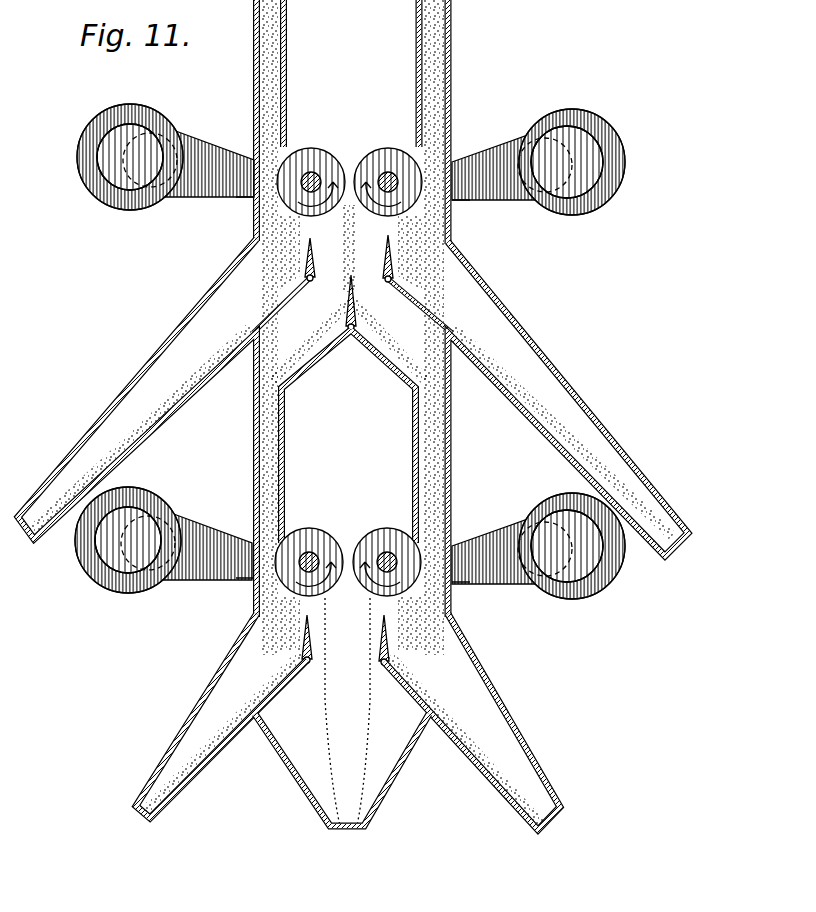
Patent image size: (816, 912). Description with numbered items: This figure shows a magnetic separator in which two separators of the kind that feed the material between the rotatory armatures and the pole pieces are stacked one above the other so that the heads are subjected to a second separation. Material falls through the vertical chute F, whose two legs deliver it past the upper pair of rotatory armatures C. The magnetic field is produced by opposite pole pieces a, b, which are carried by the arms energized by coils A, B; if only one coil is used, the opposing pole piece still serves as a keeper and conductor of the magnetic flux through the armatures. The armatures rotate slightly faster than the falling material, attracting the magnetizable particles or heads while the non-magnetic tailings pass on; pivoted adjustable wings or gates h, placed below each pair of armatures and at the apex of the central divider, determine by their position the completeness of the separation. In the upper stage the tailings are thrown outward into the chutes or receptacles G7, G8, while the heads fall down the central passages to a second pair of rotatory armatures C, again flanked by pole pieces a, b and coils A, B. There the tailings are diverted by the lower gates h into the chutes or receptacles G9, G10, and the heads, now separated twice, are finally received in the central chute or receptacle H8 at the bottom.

The vertical chute F is at (463, 38).
The rotatory armature C is at (369, 528).
The coil A is at (80, 565).
The coil B is at (634, 572).
The pole piece a is at (238, 370).
The pole piece b is at (461, 376).
The adjustable wing or gate h is at (380, 640).
The tailings chute or receptacle G7 is at (137, 428).
The tailings chute or receptacle G8 is at (568, 429).
The tailings chute or receptacle G9 is at (221, 716).
The tailings chute or receptacle G10 is at (472, 722).
The heads chute or receptacle H8 is at (342, 712).